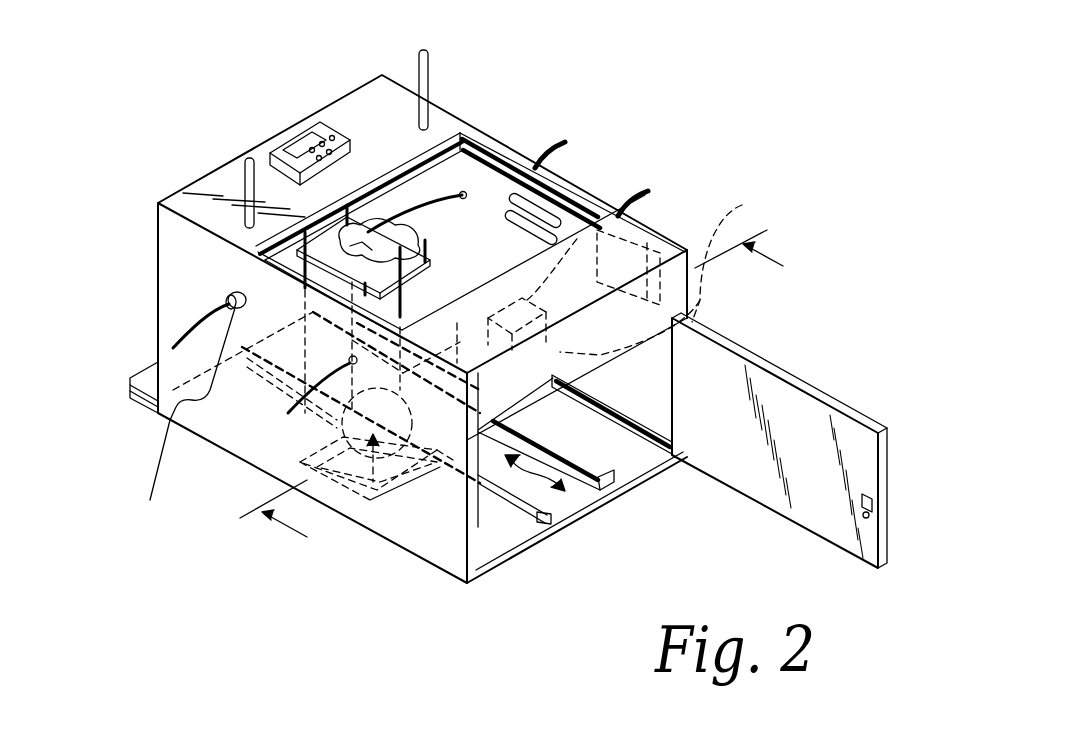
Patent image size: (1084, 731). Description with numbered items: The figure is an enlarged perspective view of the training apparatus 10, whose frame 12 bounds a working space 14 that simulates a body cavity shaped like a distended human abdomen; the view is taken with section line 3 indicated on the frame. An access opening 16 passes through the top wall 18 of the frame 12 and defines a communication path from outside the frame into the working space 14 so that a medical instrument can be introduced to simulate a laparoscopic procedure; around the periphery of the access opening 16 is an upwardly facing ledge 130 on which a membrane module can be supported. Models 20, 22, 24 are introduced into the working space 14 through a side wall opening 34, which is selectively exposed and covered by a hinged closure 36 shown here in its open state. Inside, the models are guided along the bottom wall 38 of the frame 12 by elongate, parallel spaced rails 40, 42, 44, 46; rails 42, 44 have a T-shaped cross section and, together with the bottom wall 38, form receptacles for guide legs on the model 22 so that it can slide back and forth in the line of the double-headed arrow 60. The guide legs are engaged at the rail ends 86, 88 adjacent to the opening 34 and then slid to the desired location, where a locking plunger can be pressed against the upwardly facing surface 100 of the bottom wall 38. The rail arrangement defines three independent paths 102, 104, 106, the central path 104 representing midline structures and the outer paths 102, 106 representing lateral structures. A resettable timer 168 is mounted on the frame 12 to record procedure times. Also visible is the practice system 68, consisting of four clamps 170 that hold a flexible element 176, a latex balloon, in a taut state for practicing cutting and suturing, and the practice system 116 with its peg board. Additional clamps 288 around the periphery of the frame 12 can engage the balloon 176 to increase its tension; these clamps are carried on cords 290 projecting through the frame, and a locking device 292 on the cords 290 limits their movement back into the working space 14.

The section line 3 is at (521, 396).
The training apparatus 10 is at (863, 183).
The frame 12 is at (418, 329).
The working space 14 is at (451, 205).
The access opening 16 is at (572, 143).
The top wall 18 is at (406, 66).
The model 20 is at (326, 453).
The model 22 is at (374, 156).
The model 24 is at (666, 266).
The side wall opening 34 is at (526, 578).
The hinged closure 36 is at (779, 440).
The bottom wall 38 is at (530, 405).
The rail 40 is at (601, 486).
The rail 42 is at (588, 481).
The rail 44 is at (541, 549).
The rail 46 is at (488, 616).
The double-headed arrow 60 is at (573, 520).
The practice system 68 is at (412, 230).
The rail end 86 is at (613, 422).
The rail end 88 is at (577, 559).
The upwardly facing surface 100 is at (612, 404).
The path 102 is at (732, 345).
The path 104 is at (668, 529).
The path 106 is at (561, 604).
The practice system 116 is at (582, 213).
The ledge 130 is at (550, 176).
The timer 168 is at (273, 125).
The clamp 170 is at (390, 261).
The flexible element 176 is at (307, 128).
The clamp 288 is at (421, 196).
The cord 290 is at (225, 362).
The locking device 292 is at (181, 421).